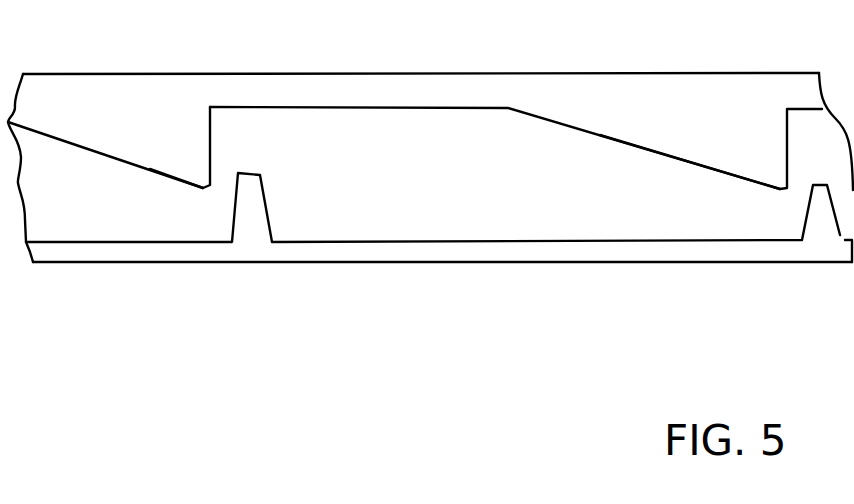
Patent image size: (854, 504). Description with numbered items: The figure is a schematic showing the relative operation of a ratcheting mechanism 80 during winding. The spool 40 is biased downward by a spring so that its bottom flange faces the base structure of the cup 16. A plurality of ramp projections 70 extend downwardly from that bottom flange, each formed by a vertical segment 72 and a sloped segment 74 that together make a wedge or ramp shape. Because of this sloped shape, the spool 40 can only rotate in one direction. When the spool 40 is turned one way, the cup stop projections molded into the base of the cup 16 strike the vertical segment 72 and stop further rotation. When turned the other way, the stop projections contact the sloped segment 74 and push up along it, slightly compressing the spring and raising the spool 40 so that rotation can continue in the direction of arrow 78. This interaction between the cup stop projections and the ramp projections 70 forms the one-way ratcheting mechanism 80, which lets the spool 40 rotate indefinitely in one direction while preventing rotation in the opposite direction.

The cup 16 is at (525, 253).
The spool 40 is at (473, 90).
The ramp projections 70 is at (178, 178).
The vertical segment 72 is at (213, 143).
The sloped segment 74 is at (120, 165).
The arrow 78 is at (250, 143).
The ratcheting mechanism 80 is at (782, 213).